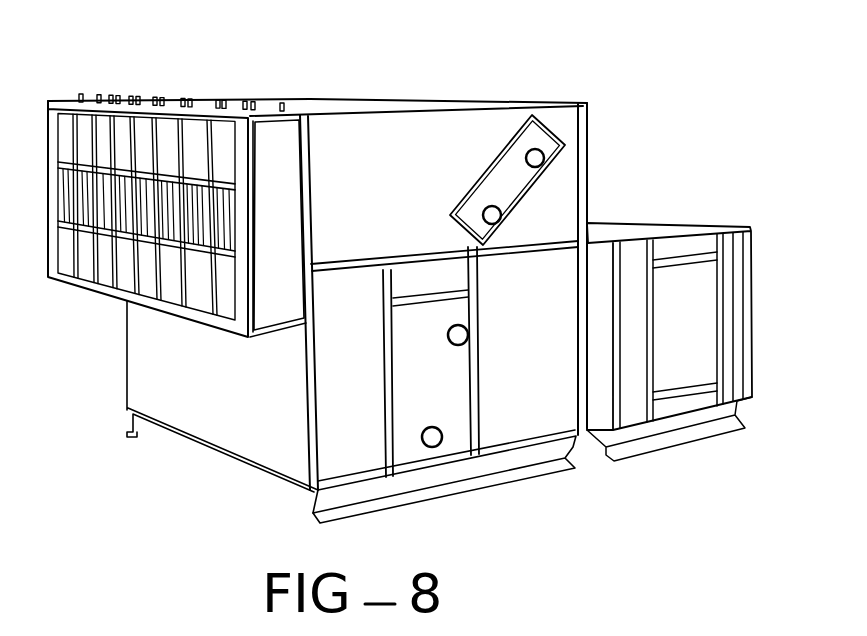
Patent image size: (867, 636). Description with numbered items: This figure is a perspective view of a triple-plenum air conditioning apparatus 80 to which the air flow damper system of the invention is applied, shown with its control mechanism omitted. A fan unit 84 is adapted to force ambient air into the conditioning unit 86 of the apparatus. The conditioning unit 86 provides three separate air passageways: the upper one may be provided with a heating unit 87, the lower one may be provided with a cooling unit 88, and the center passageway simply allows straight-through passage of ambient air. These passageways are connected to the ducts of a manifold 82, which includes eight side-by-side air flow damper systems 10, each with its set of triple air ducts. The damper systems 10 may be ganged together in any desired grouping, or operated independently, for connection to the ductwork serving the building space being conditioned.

The air flow damper system 10 is at (163, 137).
The air conditioning apparatus 80 is at (643, 124).
The manifold 82 is at (106, 298).
The fan unit 84 is at (665, 232).
The conditioning unit 86 is at (408, 127).
The heating unit 87 is at (478, 180).
The cooling unit 88 is at (460, 385).